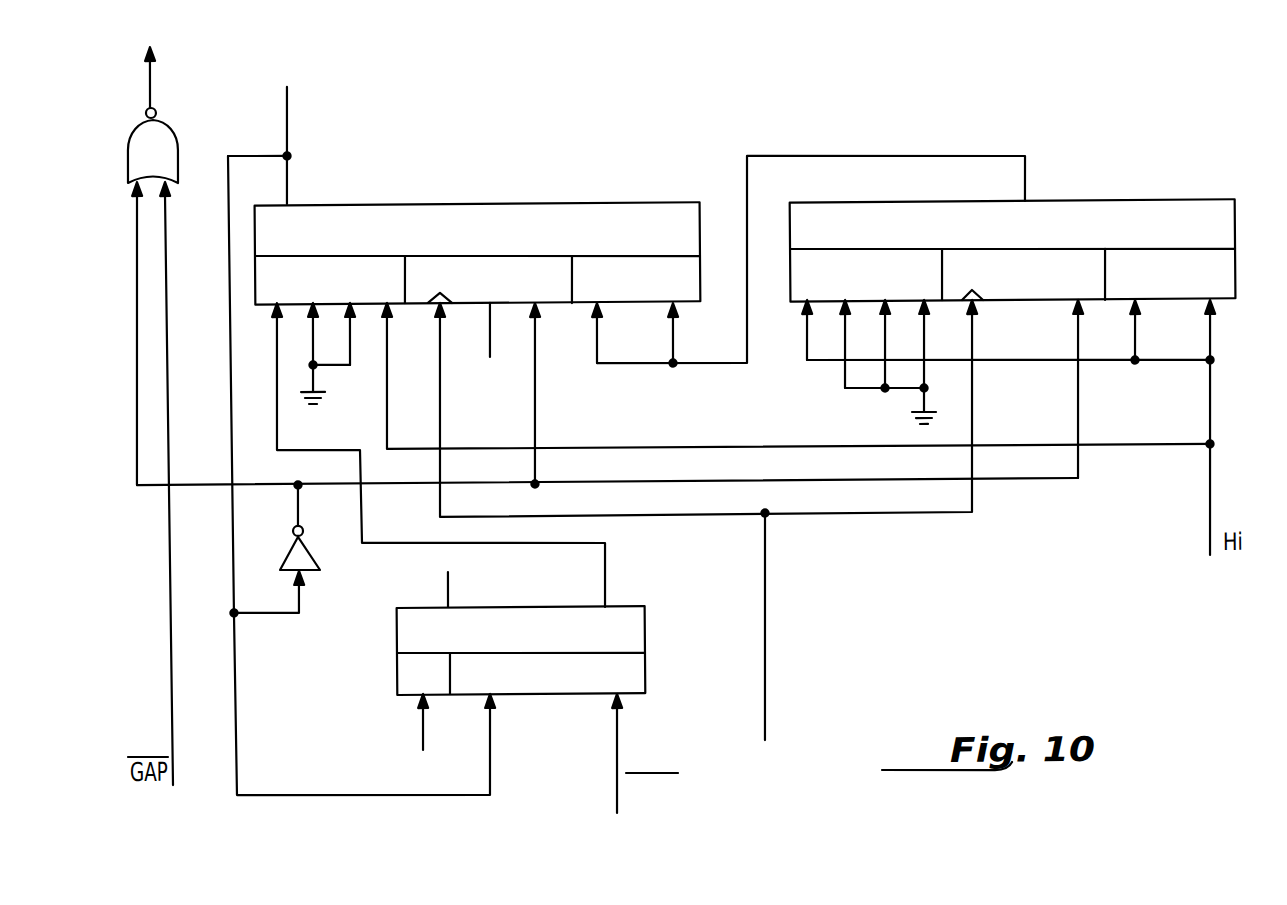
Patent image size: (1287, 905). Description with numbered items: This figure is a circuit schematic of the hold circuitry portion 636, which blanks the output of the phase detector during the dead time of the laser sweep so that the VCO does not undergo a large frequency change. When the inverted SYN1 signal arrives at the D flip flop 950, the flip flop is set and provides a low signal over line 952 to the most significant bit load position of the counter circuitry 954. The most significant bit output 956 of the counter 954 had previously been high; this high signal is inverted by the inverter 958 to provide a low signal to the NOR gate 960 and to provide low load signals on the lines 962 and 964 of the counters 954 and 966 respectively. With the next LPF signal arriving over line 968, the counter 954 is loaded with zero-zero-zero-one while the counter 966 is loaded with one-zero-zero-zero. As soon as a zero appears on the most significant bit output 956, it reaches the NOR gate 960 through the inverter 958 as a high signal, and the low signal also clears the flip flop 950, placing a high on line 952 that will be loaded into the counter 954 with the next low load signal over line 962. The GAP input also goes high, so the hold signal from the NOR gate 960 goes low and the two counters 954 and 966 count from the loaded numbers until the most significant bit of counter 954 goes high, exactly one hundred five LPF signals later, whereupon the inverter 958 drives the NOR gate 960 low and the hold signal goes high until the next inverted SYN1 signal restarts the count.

The hold circuitry portion 636 is at (879, 570).
The D flip flop 950 is at (395, 663).
The line 952 is at (604, 573).
The counter circuitry 954 is at (530, 203).
The most significant bit output 956 is at (291, 192).
The inverter 958 is at (307, 555).
The NOR gate 960 is at (140, 154).
The line 962 is at (536, 402).
The line 964 is at (1078, 420).
The counter 966 is at (1147, 205).
The line 968 is at (763, 661).